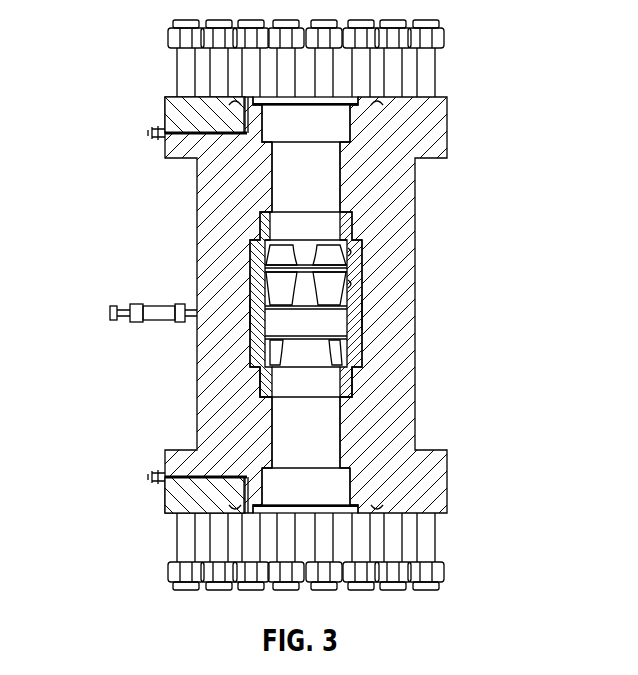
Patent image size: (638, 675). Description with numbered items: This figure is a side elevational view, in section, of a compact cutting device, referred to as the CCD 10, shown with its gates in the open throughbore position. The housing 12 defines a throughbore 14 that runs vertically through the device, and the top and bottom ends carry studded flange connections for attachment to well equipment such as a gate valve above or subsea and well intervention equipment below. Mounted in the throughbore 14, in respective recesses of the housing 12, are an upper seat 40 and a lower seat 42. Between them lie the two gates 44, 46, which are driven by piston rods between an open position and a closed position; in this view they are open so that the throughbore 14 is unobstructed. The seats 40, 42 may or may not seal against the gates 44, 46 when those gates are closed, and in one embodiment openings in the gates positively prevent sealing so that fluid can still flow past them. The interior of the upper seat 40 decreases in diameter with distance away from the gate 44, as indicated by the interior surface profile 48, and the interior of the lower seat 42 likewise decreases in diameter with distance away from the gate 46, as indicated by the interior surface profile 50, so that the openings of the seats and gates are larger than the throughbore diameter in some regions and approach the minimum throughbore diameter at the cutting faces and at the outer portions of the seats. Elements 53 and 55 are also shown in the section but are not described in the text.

The compact cutting device 10 is at (140, 15).
The housing 12 is at (213, 196).
The throughbore 14 is at (322, 152).
The upper seat 40 is at (258, 238).
The lower seat 42 is at (250, 363).
The gate 44 is at (252, 265).
The gate 46 is at (250, 325).
The interior surface profile 48 is at (360, 250).
The interior surface profile 50 is at (352, 372).
The orifice plate 53 is at (356, 270).
The spacer 55 is at (350, 337).